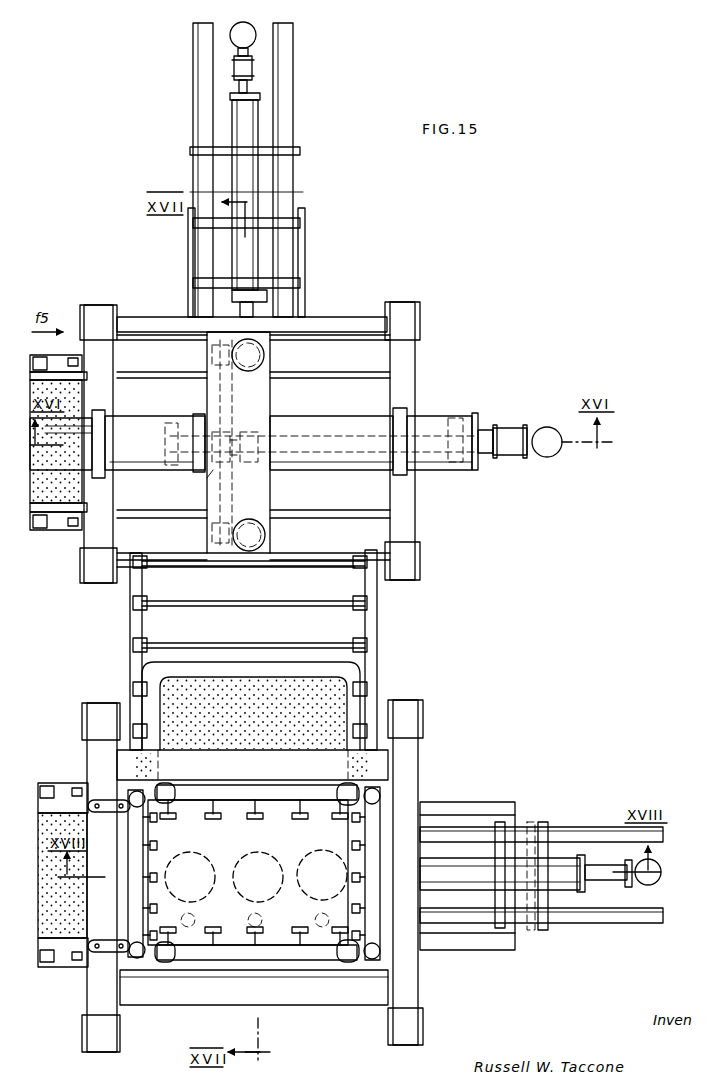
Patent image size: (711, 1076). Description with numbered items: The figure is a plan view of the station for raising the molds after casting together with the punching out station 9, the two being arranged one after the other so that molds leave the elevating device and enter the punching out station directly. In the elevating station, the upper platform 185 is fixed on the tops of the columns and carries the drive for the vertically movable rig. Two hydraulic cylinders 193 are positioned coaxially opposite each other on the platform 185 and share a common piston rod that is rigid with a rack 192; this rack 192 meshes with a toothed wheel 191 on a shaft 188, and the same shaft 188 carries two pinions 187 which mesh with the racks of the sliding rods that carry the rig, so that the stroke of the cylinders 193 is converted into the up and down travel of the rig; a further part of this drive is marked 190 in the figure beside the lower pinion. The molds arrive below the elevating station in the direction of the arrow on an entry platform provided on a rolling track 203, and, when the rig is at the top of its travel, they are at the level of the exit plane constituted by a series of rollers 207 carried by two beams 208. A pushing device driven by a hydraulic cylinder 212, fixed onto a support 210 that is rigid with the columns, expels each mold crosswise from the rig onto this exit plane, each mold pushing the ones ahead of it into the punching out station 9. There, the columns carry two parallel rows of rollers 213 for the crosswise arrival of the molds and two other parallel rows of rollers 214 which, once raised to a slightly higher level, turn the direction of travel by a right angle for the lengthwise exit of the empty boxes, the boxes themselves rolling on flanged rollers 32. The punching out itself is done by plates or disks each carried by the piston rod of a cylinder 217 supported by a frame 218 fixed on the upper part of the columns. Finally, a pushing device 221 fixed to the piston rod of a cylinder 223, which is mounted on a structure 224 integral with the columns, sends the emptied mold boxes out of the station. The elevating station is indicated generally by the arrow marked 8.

The upper press unit 8 is at (451, 325).
The punching out station 9 is at (453, 712).
The flanged rollers 32 is at (58, 786).
The platform 185 is at (416, 514).
The pinions 187 is at (207, 354).
The shaft 188 is at (238, 442).
The lower guide bushing 190 is at (268, 537).
The toothed wheel 191 is at (212, 477).
The rack 192 is at (238, 458).
The hydraulic cylinders 193 is at (147, 424).
The rolling track 203 is at (45, 365).
The rollers 207 is at (130, 612).
The beams 208 is at (135, 662).
The support 210 is at (305, 250).
The hydraulic cylinder 212 is at (258, 128).
The rollers 213 is at (157, 822).
The rollers 214 is at (258, 818).
The cylinder 217 is at (242, 858).
The frame 218 is at (425, 1022).
The pushing device 221 is at (380, 872).
The cylinder 223 is at (470, 854).
The structure 224 is at (465, 946).